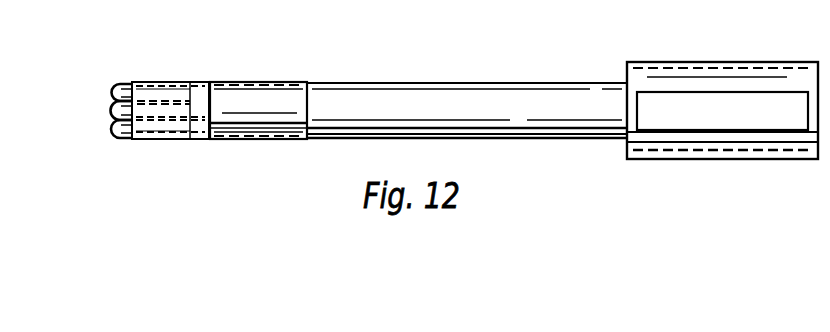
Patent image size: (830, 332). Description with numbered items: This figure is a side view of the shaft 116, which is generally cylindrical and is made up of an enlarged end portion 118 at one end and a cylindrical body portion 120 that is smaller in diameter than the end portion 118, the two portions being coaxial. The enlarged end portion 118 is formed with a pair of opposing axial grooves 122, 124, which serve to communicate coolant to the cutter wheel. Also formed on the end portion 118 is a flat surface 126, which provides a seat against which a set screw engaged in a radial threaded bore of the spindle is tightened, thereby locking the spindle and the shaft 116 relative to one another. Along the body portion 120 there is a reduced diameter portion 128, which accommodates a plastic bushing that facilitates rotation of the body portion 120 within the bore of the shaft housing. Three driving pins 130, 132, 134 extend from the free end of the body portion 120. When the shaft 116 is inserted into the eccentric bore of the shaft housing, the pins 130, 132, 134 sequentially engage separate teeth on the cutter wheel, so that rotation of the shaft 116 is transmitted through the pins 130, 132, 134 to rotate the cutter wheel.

The shaft 116 is at (392, 80).
The enlarged end portion 118 is at (760, 80).
The cylindrical body portion 120 is at (525, 98).
The axial groove 122 is at (668, 70).
The axial groove 124 is at (705, 152).
The flat surface 126 is at (761, 117).
The reduced diameter portion 128 is at (264, 98).
The driving pin 130 is at (118, 131).
The driving pin 132 is at (109, 108).
The driving pin 134 is at (125, 83).